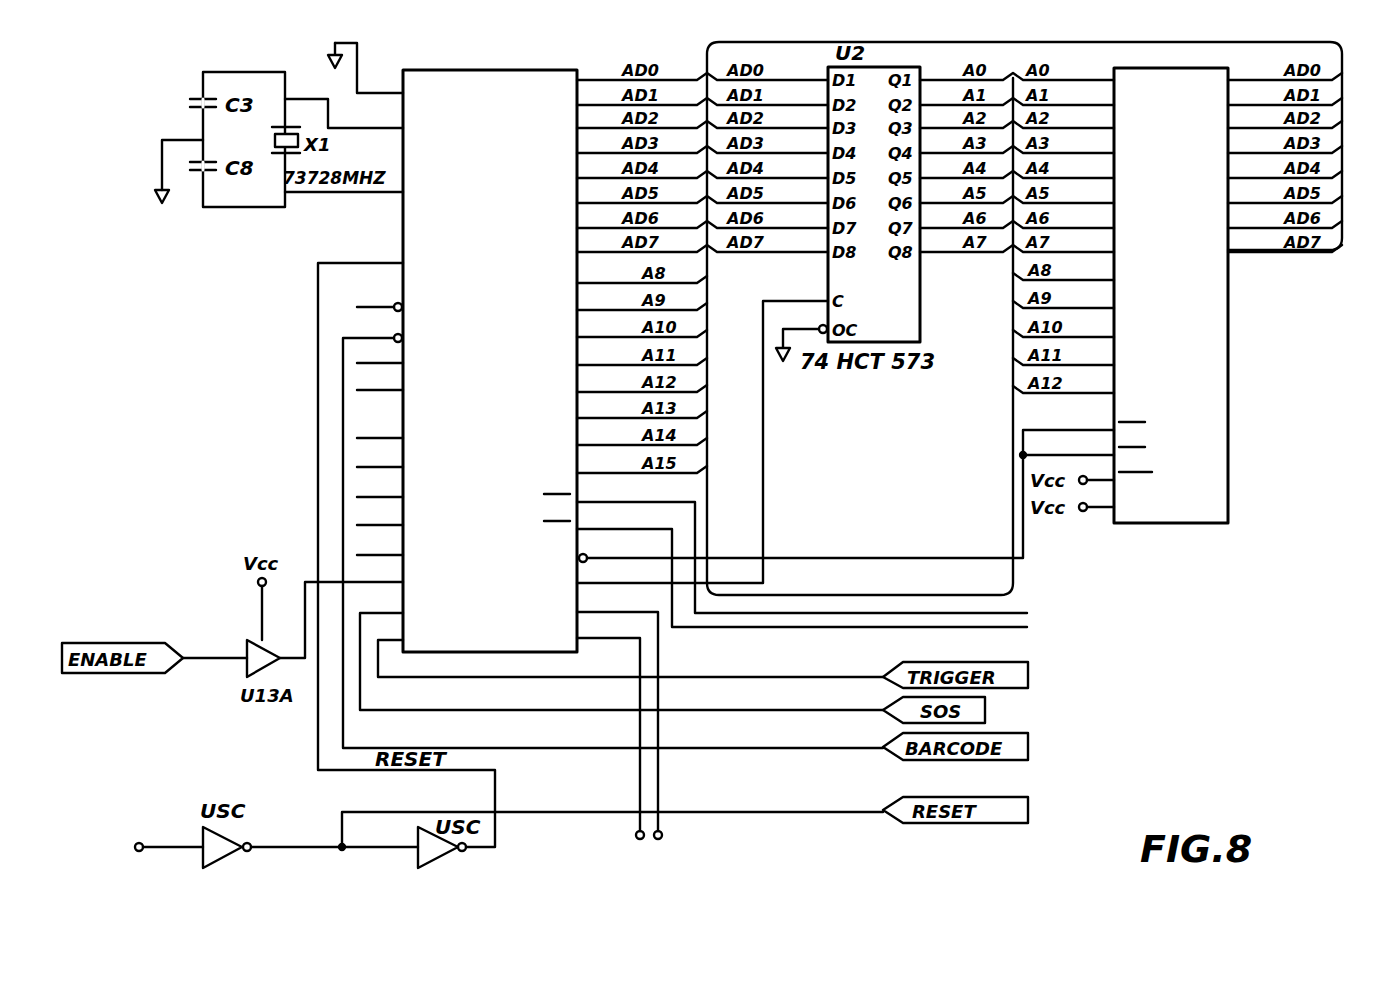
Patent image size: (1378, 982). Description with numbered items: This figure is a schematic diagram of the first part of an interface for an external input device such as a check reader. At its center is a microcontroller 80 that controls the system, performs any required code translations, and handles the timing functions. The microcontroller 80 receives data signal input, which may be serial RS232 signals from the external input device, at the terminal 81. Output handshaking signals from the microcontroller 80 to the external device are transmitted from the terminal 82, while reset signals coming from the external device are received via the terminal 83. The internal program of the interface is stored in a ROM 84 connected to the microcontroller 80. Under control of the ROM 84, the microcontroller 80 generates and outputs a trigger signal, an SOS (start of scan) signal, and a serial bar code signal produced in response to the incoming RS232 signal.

The microcontroller 80 is at (494, 80).
The terminal 81 is at (636, 839).
The terminal 82 is at (661, 840).
The terminal 83 is at (133, 852).
The ROM 84 is at (1228, 372).